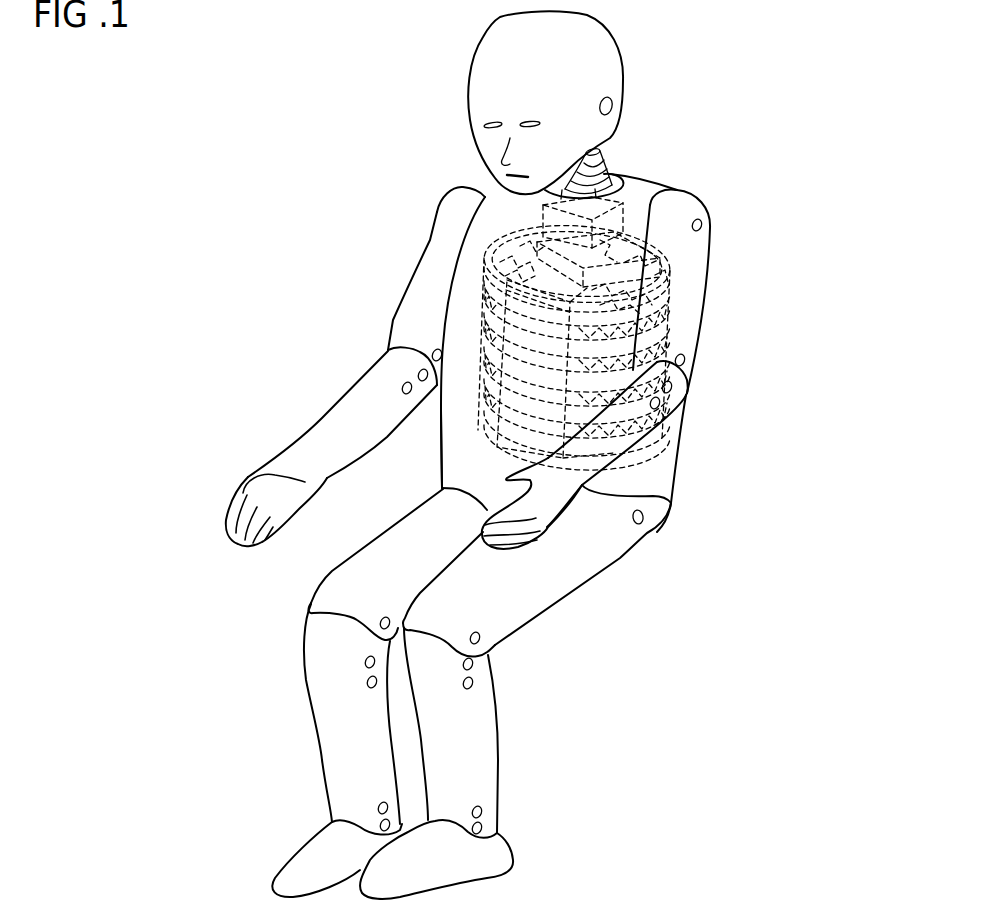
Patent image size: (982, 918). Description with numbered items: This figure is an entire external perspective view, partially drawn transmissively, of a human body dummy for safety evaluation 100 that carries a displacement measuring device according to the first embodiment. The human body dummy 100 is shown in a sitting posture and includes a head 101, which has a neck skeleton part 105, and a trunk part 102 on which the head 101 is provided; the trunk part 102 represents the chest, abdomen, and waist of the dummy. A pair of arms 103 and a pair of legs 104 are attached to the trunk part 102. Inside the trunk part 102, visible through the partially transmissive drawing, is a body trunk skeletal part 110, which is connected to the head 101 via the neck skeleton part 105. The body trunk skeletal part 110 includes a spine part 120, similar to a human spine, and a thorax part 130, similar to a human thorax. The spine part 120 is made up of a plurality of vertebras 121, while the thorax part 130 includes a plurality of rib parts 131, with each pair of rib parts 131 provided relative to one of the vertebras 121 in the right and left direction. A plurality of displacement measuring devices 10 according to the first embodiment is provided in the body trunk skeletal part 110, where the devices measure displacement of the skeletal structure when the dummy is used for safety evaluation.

The human body dummy for safety evaluation 100 is at (303, 240).
The head 101 is at (470, 93).
The trunk part 102 is at (667, 473).
The arms 103 is at (335, 419).
The legs 104 is at (581, 567).
The neck skeleton part 105 is at (608, 158).
The displacement measuring device 10 is at (655, 255).
The body trunk skeletal part 110 is at (467, 317).
The spine part 120 is at (645, 252).
The vertebras 121 is at (623, 228).
The thorax part 130 is at (672, 288).
The rib parts 131 is at (482, 275).